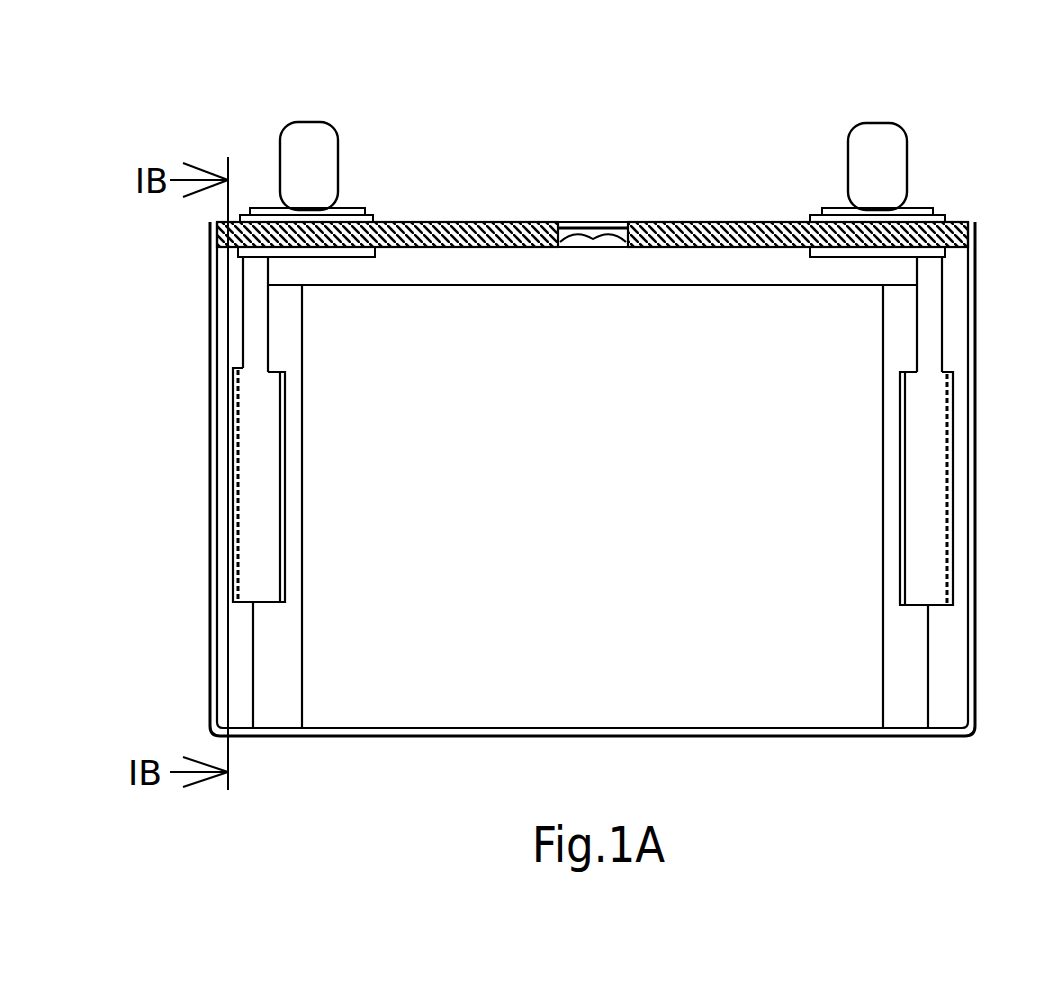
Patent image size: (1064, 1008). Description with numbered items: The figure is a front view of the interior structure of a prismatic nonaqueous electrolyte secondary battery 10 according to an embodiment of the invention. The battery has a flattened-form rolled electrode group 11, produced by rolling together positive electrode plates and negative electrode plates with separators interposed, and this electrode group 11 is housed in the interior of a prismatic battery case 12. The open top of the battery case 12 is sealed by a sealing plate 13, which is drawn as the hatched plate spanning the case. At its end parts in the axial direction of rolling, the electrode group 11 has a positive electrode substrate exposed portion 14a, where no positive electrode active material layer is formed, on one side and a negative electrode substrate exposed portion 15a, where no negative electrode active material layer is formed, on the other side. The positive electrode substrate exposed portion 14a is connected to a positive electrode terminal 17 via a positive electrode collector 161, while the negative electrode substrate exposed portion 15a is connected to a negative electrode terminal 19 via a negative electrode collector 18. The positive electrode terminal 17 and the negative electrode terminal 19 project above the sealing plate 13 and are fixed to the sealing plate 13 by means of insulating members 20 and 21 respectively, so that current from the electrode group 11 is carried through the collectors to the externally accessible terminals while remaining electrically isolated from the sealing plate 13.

The prismatic nonaqueous electrolyte secondary battery 10 is at (167, 101).
The flattened-form rolled electrode group 11 is at (765, 609).
The prismatic battery case 12 is at (215, 685).
The sealing plate 13 is at (645, 224).
The positive electrode substrate exposed portion 14a is at (285, 638).
The negative electrode substrate exposed portion 15a is at (925, 677).
The positive electrode collector 161 is at (250, 425).
The positive electrode terminal 17 is at (320, 145).
The negative electrode collector 18 is at (938, 568).
The negative electrode terminal 19 is at (863, 143).
The insulating member 20 is at (373, 218).
The insulating member 21 is at (812, 218).